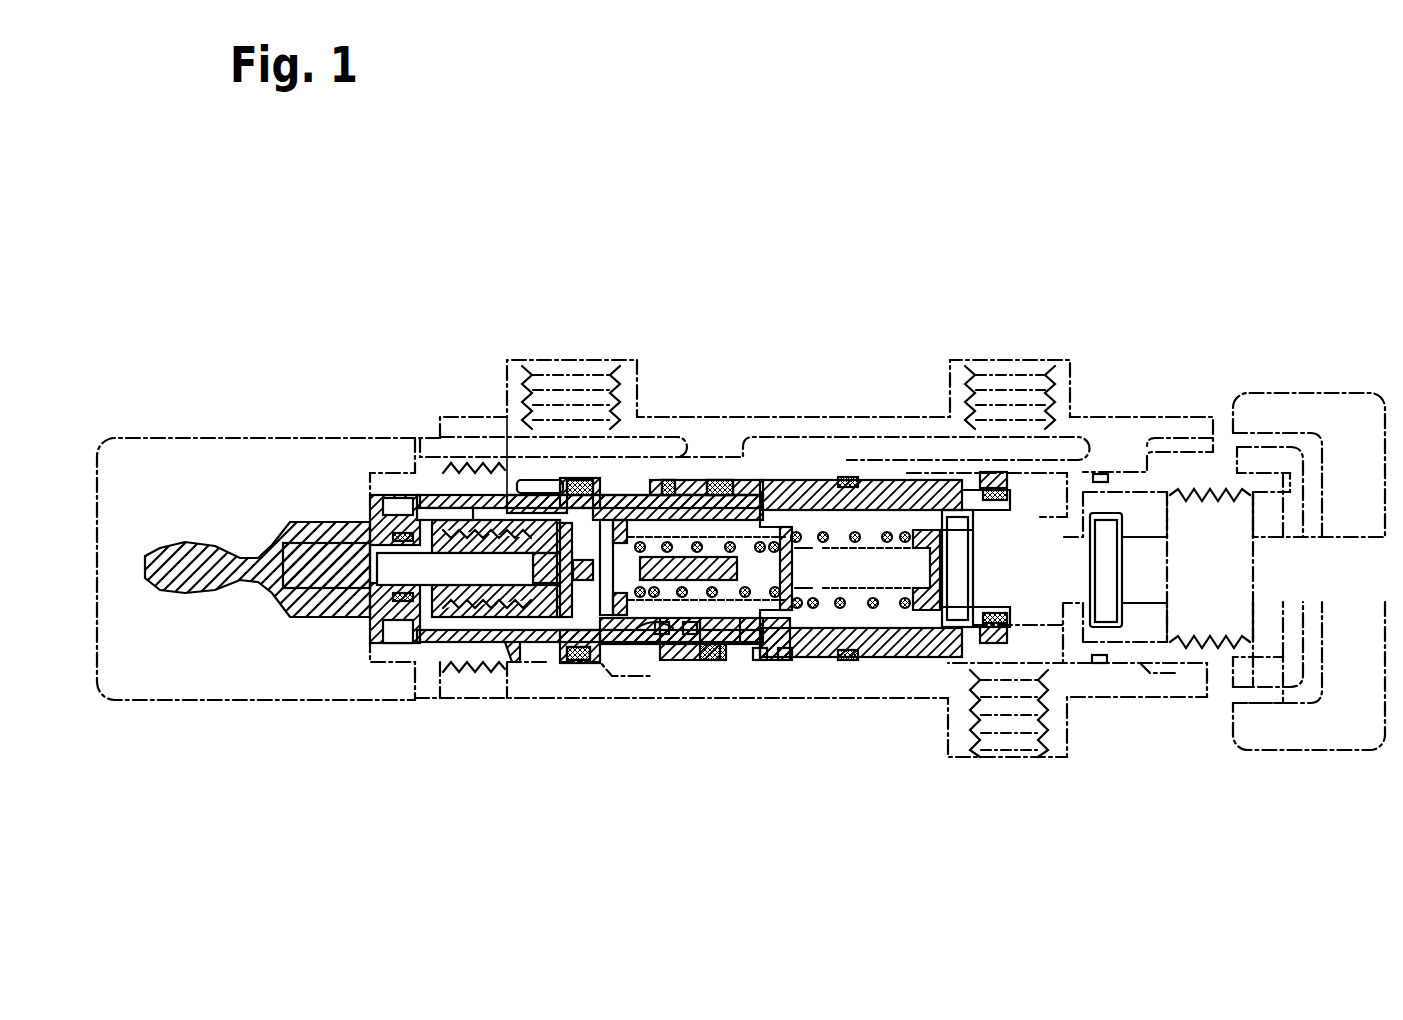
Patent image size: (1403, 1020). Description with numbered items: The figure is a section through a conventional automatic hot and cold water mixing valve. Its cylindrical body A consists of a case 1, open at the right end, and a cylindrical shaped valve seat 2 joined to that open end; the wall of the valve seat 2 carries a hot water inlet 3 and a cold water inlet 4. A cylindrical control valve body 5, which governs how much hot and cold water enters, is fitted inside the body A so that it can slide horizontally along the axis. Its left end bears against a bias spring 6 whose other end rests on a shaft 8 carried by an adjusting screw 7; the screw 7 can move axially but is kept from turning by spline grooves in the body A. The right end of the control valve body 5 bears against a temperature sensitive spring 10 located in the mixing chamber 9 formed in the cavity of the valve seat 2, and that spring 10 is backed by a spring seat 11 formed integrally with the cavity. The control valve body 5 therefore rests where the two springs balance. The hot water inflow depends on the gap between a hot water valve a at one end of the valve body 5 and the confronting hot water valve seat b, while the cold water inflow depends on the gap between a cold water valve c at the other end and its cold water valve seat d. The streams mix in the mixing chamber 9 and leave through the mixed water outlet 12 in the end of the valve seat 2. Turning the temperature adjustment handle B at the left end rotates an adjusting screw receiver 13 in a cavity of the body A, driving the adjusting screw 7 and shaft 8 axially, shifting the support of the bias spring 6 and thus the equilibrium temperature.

The case 1 is at (618, 500).
The cylindrical shaped valve seat 2 is at (838, 483).
The hot water inlet 3 is at (692, 640).
The cold water inlet 4 is at (745, 642).
The control valve body 5 is at (727, 655).
The bias spring 6 is at (653, 580).
The adjusting screw 7 is at (513, 668).
The shaft 8 is at (593, 560).
The mixing chamber 9 is at (858, 610).
The temperature sensitive spring 10 is at (880, 607).
The spring seat 11 is at (932, 613).
The mixed water outlet 12 is at (957, 588).
The adjusting screw receiver 13 is at (428, 637).
The hot water valve a is at (660, 630).
The hot water valve seat b is at (690, 632).
The cold water valve c is at (783, 660).
The cold water valve seat d is at (760, 660).
The body A is at (805, 248).
The temperature adjustment handle B is at (233, 437).